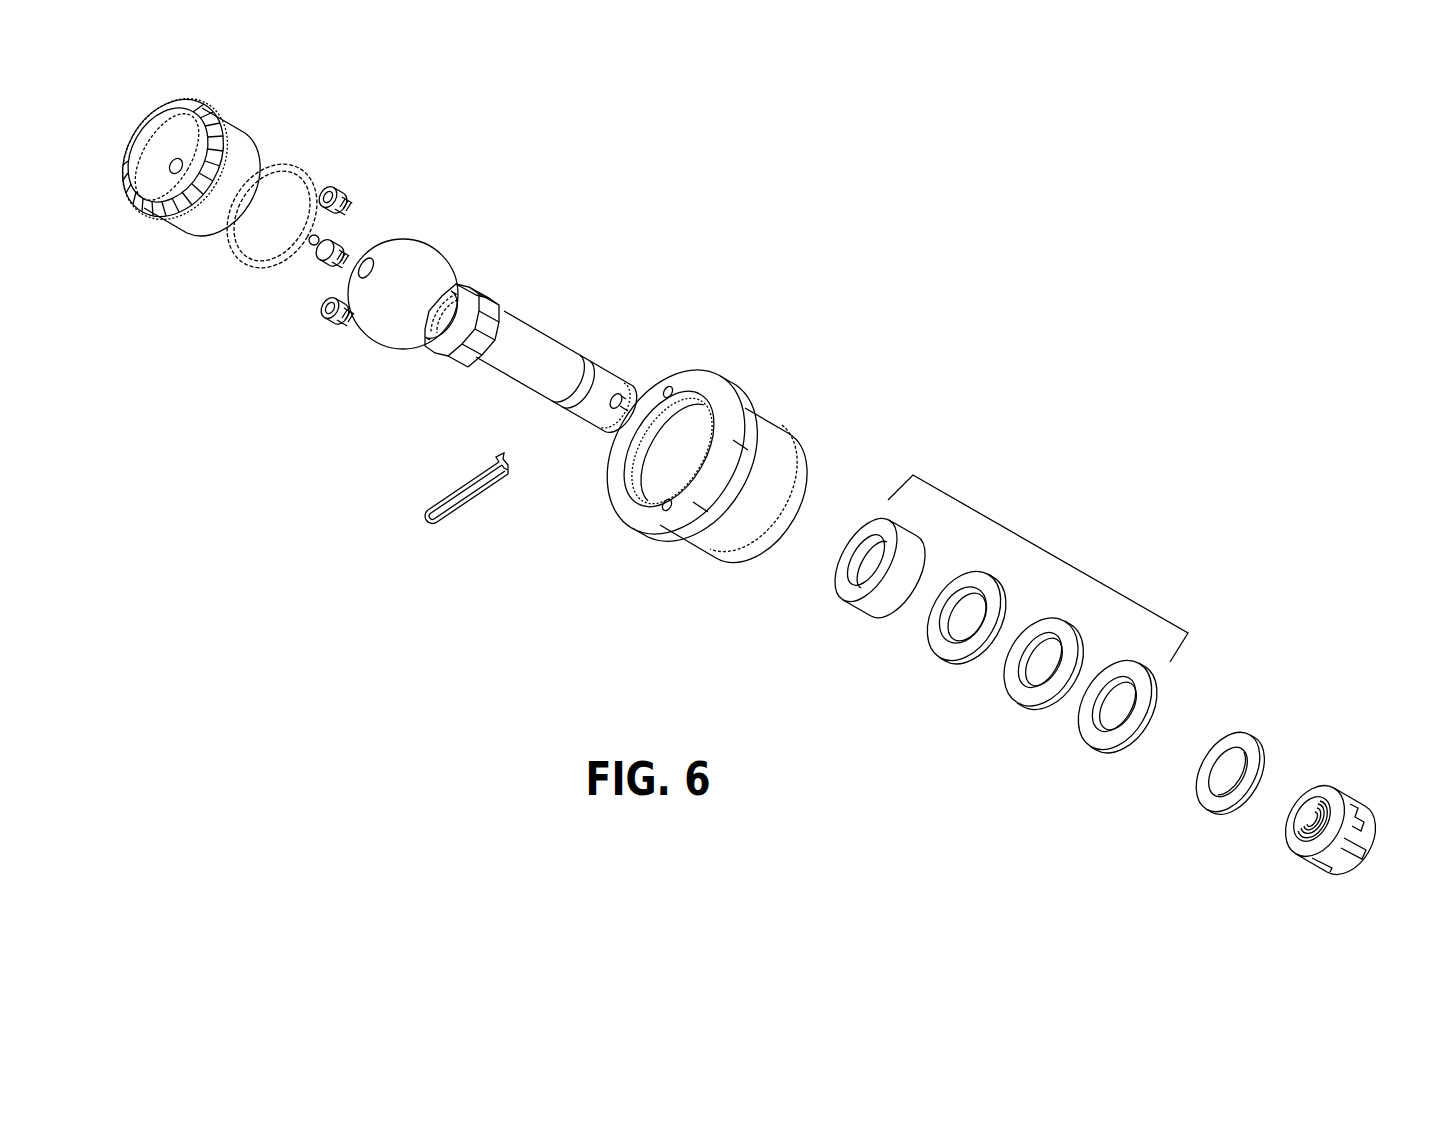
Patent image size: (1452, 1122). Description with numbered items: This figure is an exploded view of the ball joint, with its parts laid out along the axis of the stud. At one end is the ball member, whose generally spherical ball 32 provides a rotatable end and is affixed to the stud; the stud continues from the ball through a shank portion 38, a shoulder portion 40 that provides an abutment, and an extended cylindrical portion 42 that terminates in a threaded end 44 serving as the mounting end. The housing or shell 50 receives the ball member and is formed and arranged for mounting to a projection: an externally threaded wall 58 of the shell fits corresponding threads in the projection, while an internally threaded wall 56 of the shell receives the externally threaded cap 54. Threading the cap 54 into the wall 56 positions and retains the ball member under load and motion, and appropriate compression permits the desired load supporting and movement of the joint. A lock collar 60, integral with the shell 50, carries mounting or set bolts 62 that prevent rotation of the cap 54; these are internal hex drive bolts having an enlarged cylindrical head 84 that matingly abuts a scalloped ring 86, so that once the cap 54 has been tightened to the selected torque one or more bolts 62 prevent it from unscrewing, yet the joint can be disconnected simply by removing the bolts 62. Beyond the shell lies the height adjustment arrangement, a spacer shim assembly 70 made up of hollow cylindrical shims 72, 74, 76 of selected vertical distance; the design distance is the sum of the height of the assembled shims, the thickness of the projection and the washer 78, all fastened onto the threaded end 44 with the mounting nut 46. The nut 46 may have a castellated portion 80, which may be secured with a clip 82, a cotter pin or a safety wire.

The ball 32 is at (421, 257).
The shank portion 38 is at (437, 352).
The shoulder portion 40 is at (490, 296).
The extended cylindrical portion 42 is at (547, 340).
The threaded end 44 is at (592, 415).
The mounting nut 46 is at (1336, 835).
The housing or shell 50 is at (694, 462).
The externally threaded cap 54 is at (237, 131).
The internally threaded wall 56 is at (691, 415).
The externally threaded wall 58 is at (755, 545).
The lock collar 60 is at (732, 408).
The mounting or set bolts 62 is at (350, 202).
The spacer shim assembly 70 is at (989, 641).
The shim 72 is at (877, 608).
The shim 74 is at (965, 662).
The shim 76 is at (1105, 735).
The washer 78 is at (1252, 750).
The castellated portion 80 is at (1345, 852).
The clip 82 is at (420, 520).
The enlarged cylindrical head 84 is at (235, 182).
The scalloped ring 86 is at (145, 218).